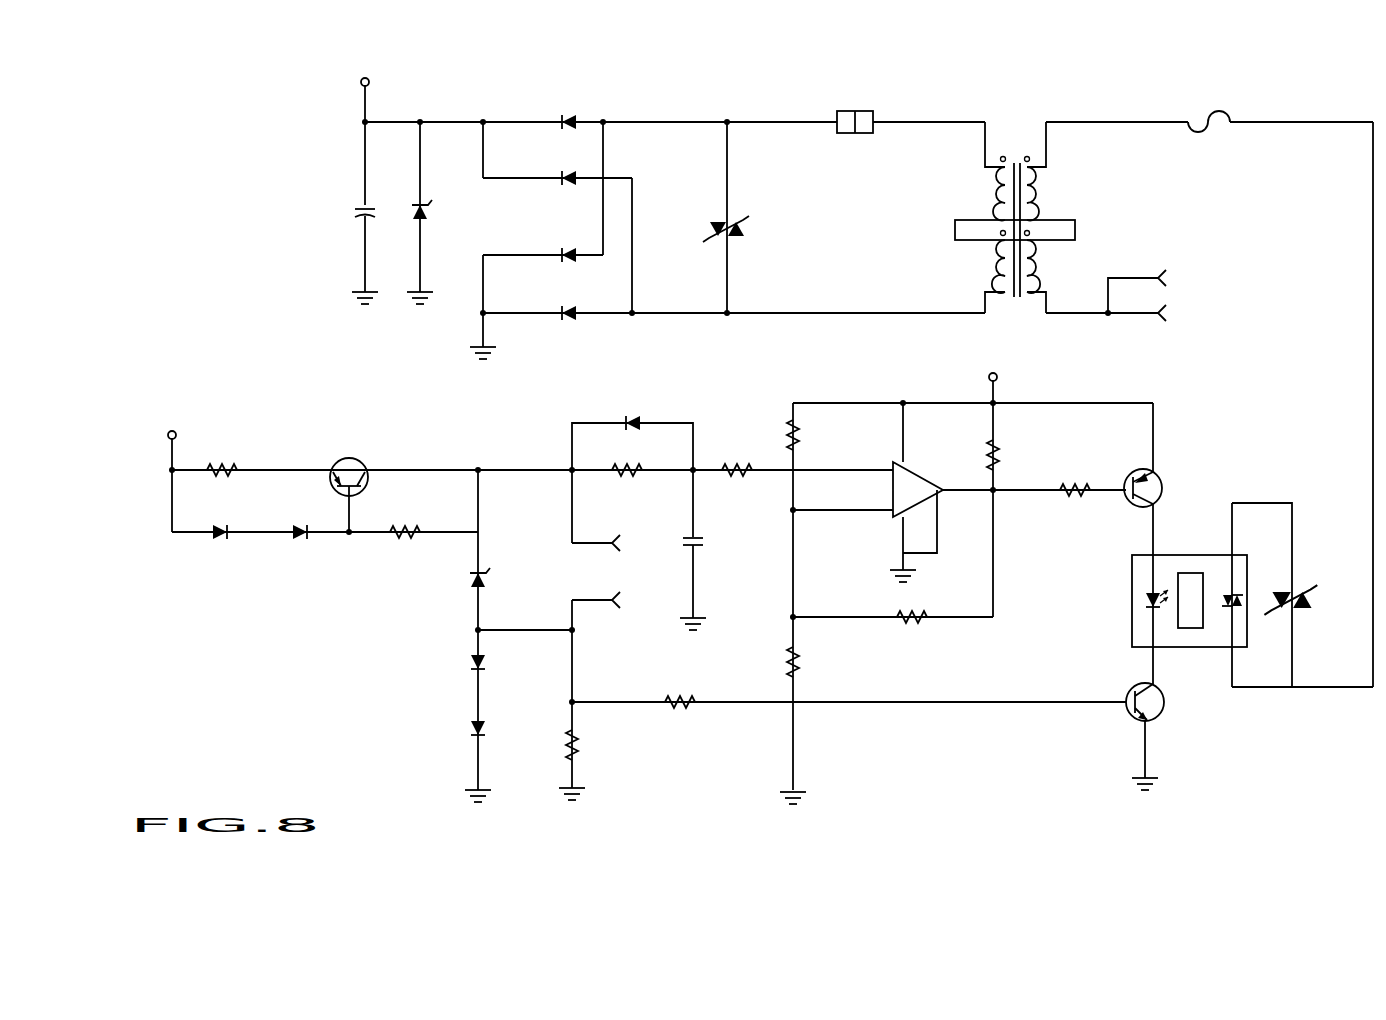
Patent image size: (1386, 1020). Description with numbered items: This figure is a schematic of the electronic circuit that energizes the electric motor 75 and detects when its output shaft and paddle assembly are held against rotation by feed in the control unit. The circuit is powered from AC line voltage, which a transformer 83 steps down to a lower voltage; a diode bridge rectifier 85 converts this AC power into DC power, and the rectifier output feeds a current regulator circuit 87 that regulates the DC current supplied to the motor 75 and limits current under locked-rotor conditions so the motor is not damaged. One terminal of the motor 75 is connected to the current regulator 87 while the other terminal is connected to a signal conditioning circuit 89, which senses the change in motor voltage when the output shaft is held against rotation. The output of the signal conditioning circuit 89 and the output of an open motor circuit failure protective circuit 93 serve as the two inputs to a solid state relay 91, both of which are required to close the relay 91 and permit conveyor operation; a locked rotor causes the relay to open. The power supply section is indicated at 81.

The electric motor 75 is at (599, 572).
The power supply circuit 81 is at (941, 78).
The transformer 83 is at (1026, 118).
The diode bridge rectifier 85 is at (604, 99).
The current regulator circuit 87 is at (495, 447).
The signal conditioning circuit 89 is at (1185, 400).
The solid state relay 91 is at (1178, 647).
The open motor circuit failure protective circuit 93 is at (1185, 792).